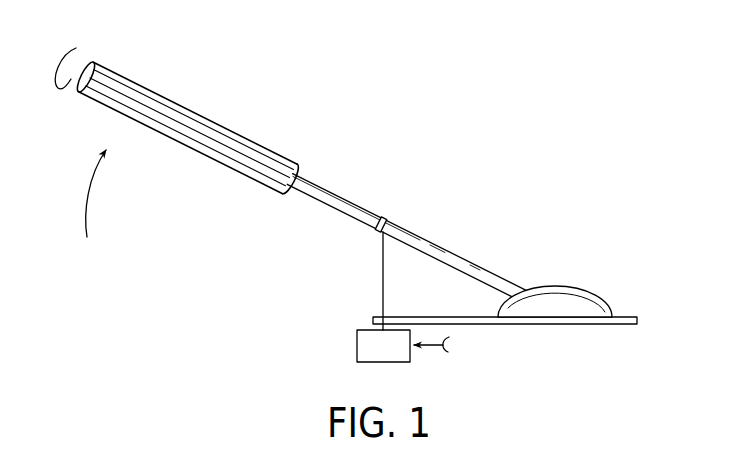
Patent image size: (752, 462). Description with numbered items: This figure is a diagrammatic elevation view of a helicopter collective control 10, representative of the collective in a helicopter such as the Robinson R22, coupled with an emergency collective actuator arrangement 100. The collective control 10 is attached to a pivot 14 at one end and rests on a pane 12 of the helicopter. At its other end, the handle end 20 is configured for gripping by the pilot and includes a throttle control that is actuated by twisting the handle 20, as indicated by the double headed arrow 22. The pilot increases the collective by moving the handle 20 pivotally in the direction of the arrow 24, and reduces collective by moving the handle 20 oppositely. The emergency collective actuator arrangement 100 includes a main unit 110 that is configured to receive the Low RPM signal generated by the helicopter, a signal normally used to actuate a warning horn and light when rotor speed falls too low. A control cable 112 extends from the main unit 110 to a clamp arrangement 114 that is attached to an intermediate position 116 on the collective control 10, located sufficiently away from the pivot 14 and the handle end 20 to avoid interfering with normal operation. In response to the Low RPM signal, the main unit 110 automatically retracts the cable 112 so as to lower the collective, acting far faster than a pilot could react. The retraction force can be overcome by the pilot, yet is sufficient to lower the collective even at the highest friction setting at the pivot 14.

The collective control 10 is at (486, 179).
The base plate 12 is at (627, 317).
The pivot 14 is at (577, 288).
The handle end 20 is at (214, 119).
The double headed arrow 22 is at (81, 55).
The arrow 24 is at (88, 203).
The emergency collective actuator arrangement 100 is at (338, 343).
The main unit 110 is at (391, 363).
The control cable 112 is at (383, 270).
The clamp arrangement 114 is at (385, 225).
The intermediate position 116 is at (387, 222).